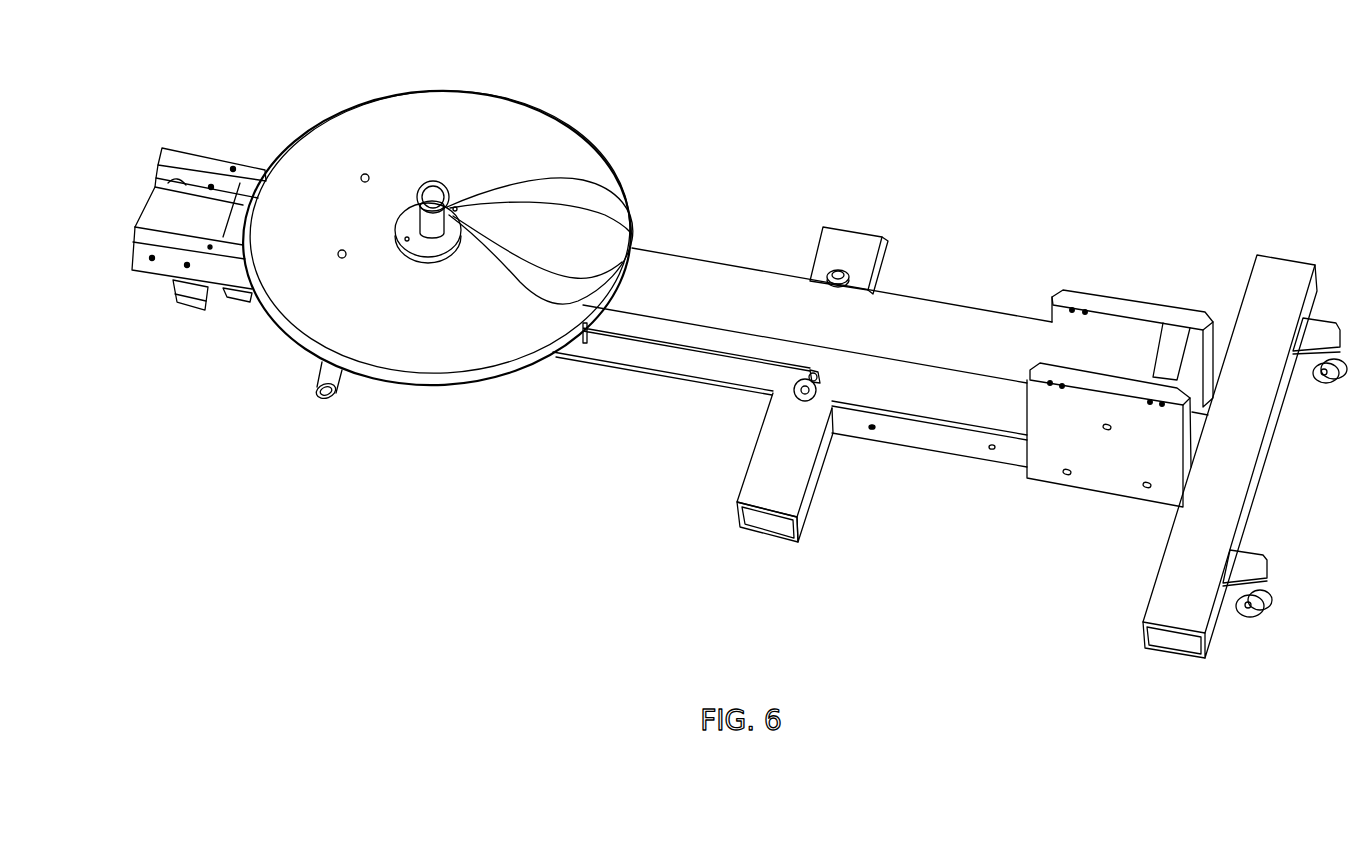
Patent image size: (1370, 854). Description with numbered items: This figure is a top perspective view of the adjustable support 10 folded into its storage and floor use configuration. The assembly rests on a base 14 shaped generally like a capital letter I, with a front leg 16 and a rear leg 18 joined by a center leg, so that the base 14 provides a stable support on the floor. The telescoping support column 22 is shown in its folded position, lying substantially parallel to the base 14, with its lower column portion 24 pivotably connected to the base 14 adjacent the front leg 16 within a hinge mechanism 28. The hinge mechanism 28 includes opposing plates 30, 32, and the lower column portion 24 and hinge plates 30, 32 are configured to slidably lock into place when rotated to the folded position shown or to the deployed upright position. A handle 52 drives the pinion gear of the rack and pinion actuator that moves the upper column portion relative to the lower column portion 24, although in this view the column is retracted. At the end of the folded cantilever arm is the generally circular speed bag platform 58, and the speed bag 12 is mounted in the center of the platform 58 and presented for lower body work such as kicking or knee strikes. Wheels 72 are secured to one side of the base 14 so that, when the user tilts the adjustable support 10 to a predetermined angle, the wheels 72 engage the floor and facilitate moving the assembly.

The adjustable support 10 is at (747, 351).
The speed bag 12 is at (583, 188).
The base 14 is at (986, 504).
The front leg 16 is at (1278, 273).
The rear leg 18 is at (765, 455).
The telescoping support column 22 is at (734, 264).
The lower column portion 24 is at (940, 322).
The hinge mechanism 28 is at (1134, 313).
The hinge plate 30 is at (1100, 460).
The hinge plate 32 is at (1105, 300).
The handle 52 is at (320, 378).
The speed bag platform 58 is at (398, 114).
The wheels 72 is at (1320, 323).